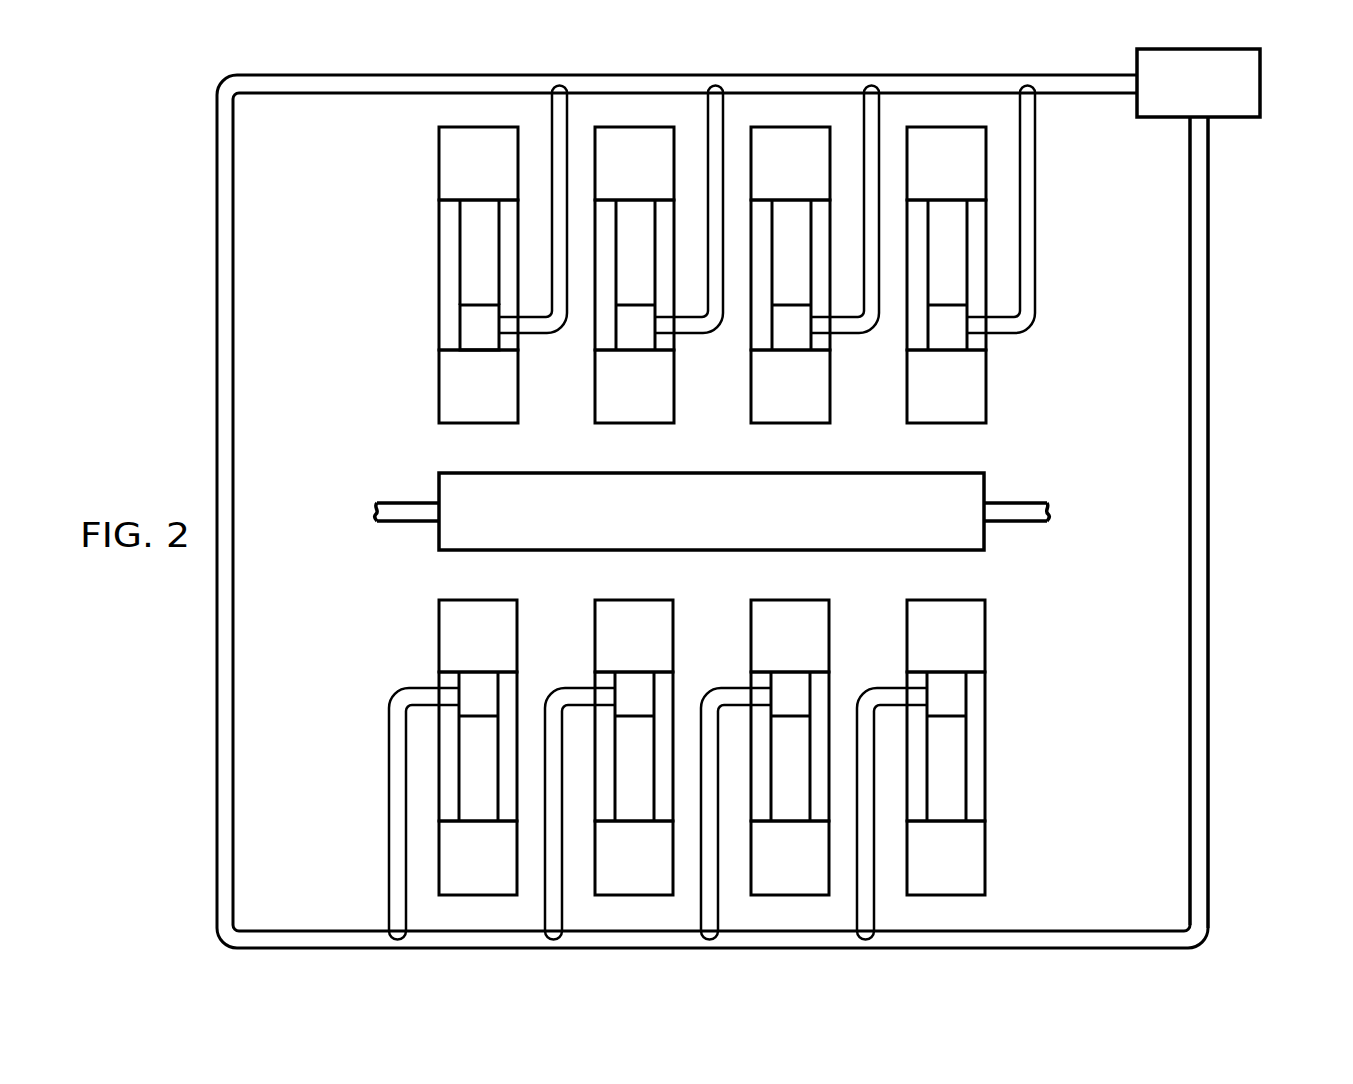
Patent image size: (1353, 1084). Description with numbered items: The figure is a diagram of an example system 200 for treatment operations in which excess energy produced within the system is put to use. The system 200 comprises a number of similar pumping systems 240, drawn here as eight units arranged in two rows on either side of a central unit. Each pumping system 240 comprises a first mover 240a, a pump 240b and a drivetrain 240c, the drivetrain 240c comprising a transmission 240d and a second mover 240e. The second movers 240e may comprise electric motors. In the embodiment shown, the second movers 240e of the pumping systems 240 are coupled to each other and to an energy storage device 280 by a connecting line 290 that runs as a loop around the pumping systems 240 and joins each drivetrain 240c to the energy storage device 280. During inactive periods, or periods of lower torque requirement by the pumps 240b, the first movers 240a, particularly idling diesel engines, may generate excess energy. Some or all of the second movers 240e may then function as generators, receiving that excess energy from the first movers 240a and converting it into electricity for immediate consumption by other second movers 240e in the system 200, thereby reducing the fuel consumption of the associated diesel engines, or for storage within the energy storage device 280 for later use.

The system for treatment operations 200 is at (148, 281).
The pumping system 240 is at (333, 229).
The first mover 240a is at (448, 162).
The pump 240b is at (447, 388).
The drivetrain 240c is at (438, 273).
The transmission 240d is at (470, 232).
The second mover 240e is at (470, 327).
The energy storage device 280 is at (1262, 82).
The fluid conduit 290 is at (1208, 437).